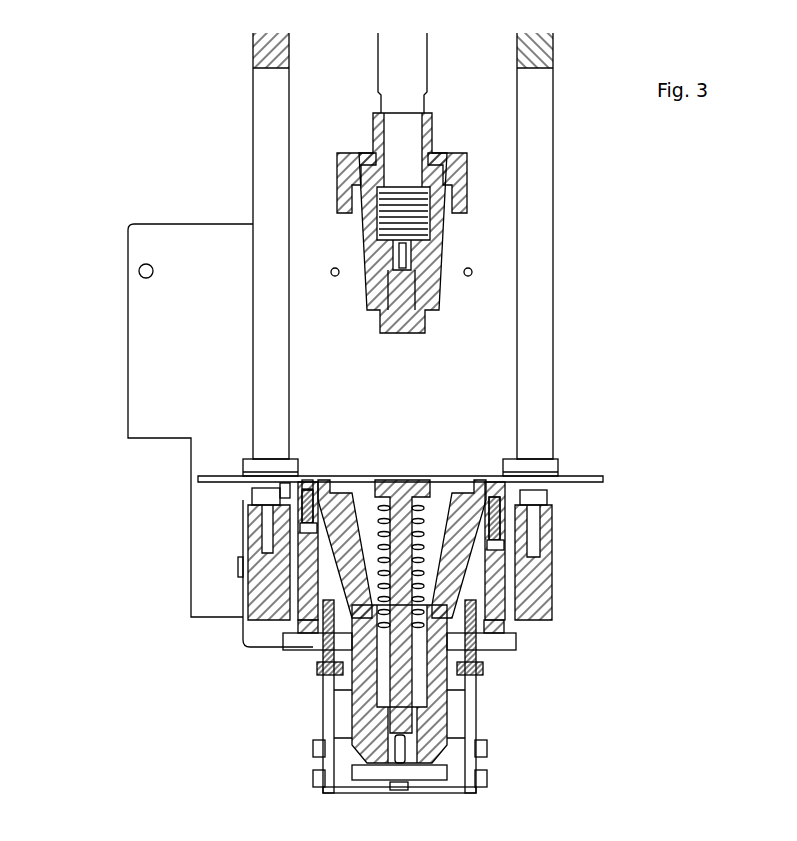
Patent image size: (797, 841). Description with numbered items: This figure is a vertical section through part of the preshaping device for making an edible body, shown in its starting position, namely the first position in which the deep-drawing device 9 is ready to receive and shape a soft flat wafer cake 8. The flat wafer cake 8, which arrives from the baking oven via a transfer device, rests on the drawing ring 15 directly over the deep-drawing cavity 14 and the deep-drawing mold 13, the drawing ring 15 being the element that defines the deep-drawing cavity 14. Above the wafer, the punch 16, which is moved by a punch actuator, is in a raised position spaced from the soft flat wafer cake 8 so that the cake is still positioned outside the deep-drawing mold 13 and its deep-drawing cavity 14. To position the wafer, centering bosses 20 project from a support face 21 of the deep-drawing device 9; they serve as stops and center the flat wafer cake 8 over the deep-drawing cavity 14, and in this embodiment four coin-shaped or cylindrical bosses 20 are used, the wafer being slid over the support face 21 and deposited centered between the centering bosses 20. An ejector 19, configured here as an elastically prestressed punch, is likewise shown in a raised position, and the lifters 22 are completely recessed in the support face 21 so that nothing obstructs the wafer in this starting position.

The flat wafer cake 8 is at (454, 443).
The deep-drawing device 9 is at (482, 246).
The deep-drawing mold 13 is at (298, 565).
The deep-drawing cavity 14 is at (237, 606).
The drawing ring 15 is at (178, 507).
The punch 16 is at (530, 183).
The ejector 19 is at (265, 696).
The centering bosses 20 is at (383, 414).
The support face 21 is at (641, 468).
The lifters 22 is at (383, 581).